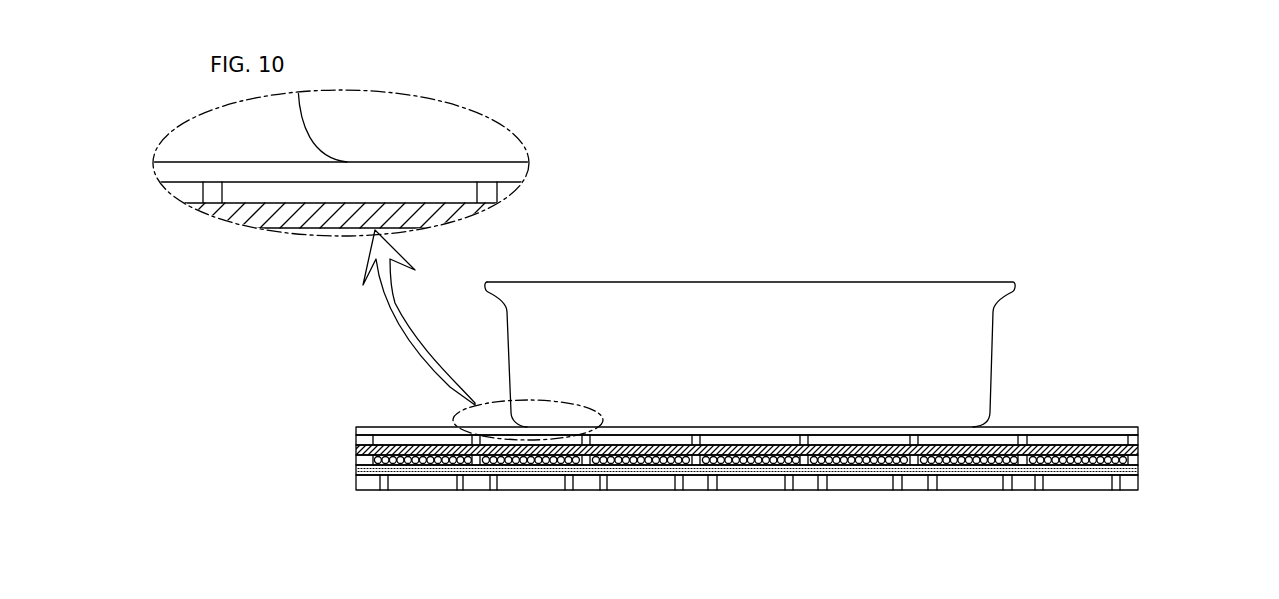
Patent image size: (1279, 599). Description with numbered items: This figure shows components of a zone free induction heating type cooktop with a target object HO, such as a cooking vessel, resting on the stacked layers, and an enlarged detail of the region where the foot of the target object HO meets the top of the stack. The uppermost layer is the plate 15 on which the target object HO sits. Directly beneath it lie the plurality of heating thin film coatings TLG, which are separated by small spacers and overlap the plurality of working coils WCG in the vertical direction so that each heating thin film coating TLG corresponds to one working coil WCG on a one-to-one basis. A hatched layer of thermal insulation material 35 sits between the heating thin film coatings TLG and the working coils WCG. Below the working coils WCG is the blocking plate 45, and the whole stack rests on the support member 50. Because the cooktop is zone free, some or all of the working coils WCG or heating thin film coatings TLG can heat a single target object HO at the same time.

The target object HO is at (880, 297).
The upper plate 15 is at (1133, 432).
The heating thin film coating TLG is at (373, 442).
The thermal insulation material 35 is at (1137, 450).
The working coil WCG is at (1138, 465).
The blocking plate 45 is at (1137, 472).
The support member 50 is at (1113, 492).